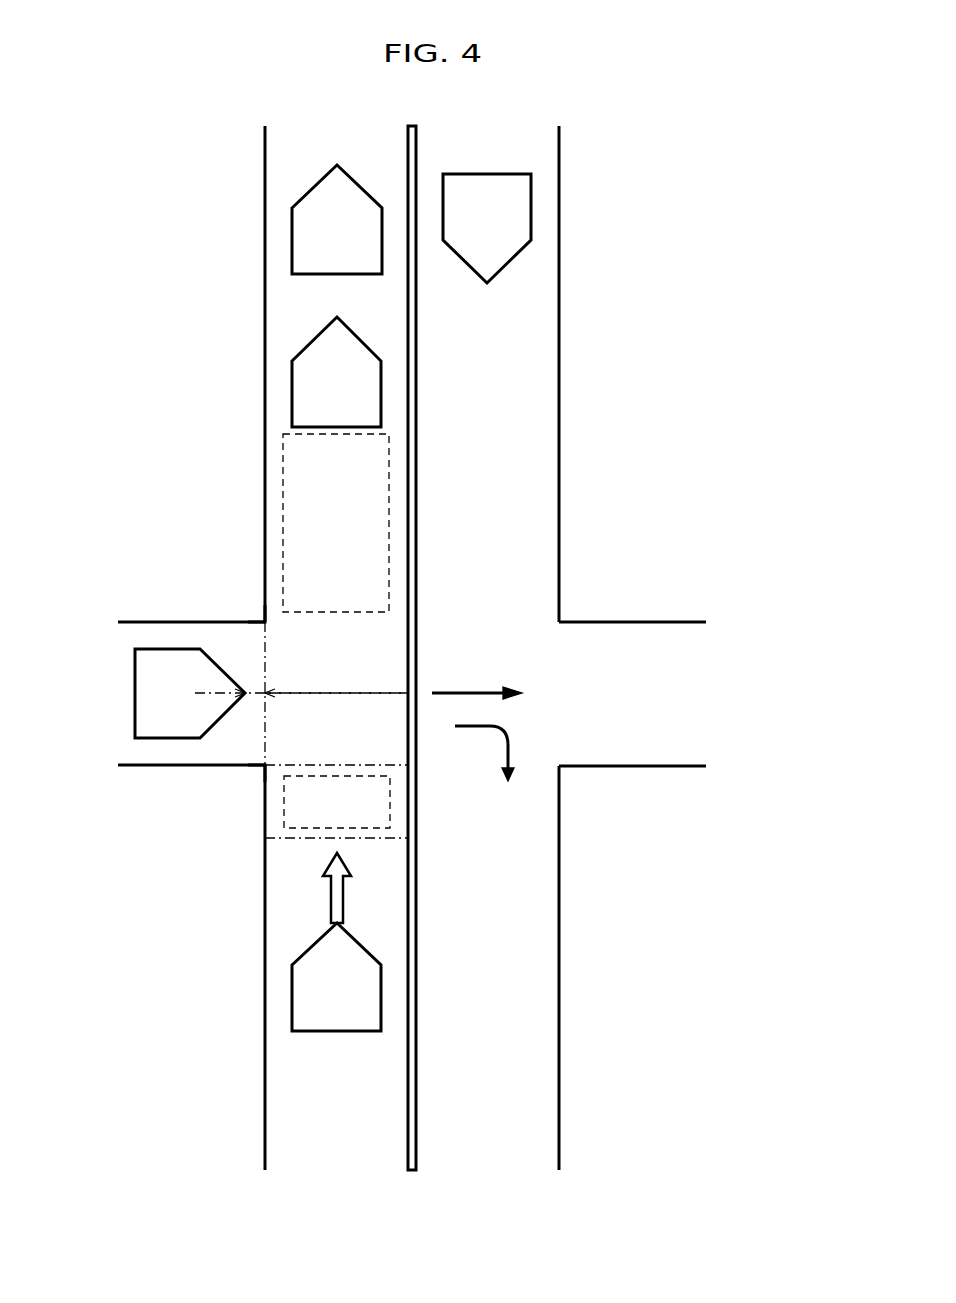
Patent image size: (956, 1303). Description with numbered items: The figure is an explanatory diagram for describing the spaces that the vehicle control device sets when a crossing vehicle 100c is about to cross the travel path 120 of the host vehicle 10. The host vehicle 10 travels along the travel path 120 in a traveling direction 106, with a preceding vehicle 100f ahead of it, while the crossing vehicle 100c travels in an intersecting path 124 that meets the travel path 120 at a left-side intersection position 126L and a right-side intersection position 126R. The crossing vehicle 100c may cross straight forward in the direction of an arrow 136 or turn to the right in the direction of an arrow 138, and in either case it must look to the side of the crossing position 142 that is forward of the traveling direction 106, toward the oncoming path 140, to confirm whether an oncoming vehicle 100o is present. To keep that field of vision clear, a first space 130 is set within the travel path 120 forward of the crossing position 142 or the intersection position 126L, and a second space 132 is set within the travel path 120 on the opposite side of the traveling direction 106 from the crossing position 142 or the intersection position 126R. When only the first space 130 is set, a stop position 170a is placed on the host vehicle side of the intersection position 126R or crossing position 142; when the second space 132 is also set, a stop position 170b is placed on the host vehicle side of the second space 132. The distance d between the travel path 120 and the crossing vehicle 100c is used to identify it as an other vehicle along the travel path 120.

The host vehicle 10 is at (292, 998).
The crossing vehicle 100c is at (158, 695).
The preceding vehicle 100f is at (381, 385).
The oncoming vehicle 100o is at (531, 190).
The traveling direction 106 is at (343, 900).
The travel path 120 is at (295, 1078).
The intersecting path 124 is at (153, 620).
The intersection position on the left side 126L is at (262, 620).
The intersection position on the right side 126R is at (262, 767).
The first space 130 is at (389, 505).
The second space 132 is at (390, 808).
The arrow 136 is at (453, 690).
The arrow 138 is at (510, 738).
The oncoming path 140 is at (533, 891).
The crossing position 142 is at (310, 690).
The stop position 170a is at (293, 763).
The stop position 170b is at (290, 843).
The distance d is at (301, 681).